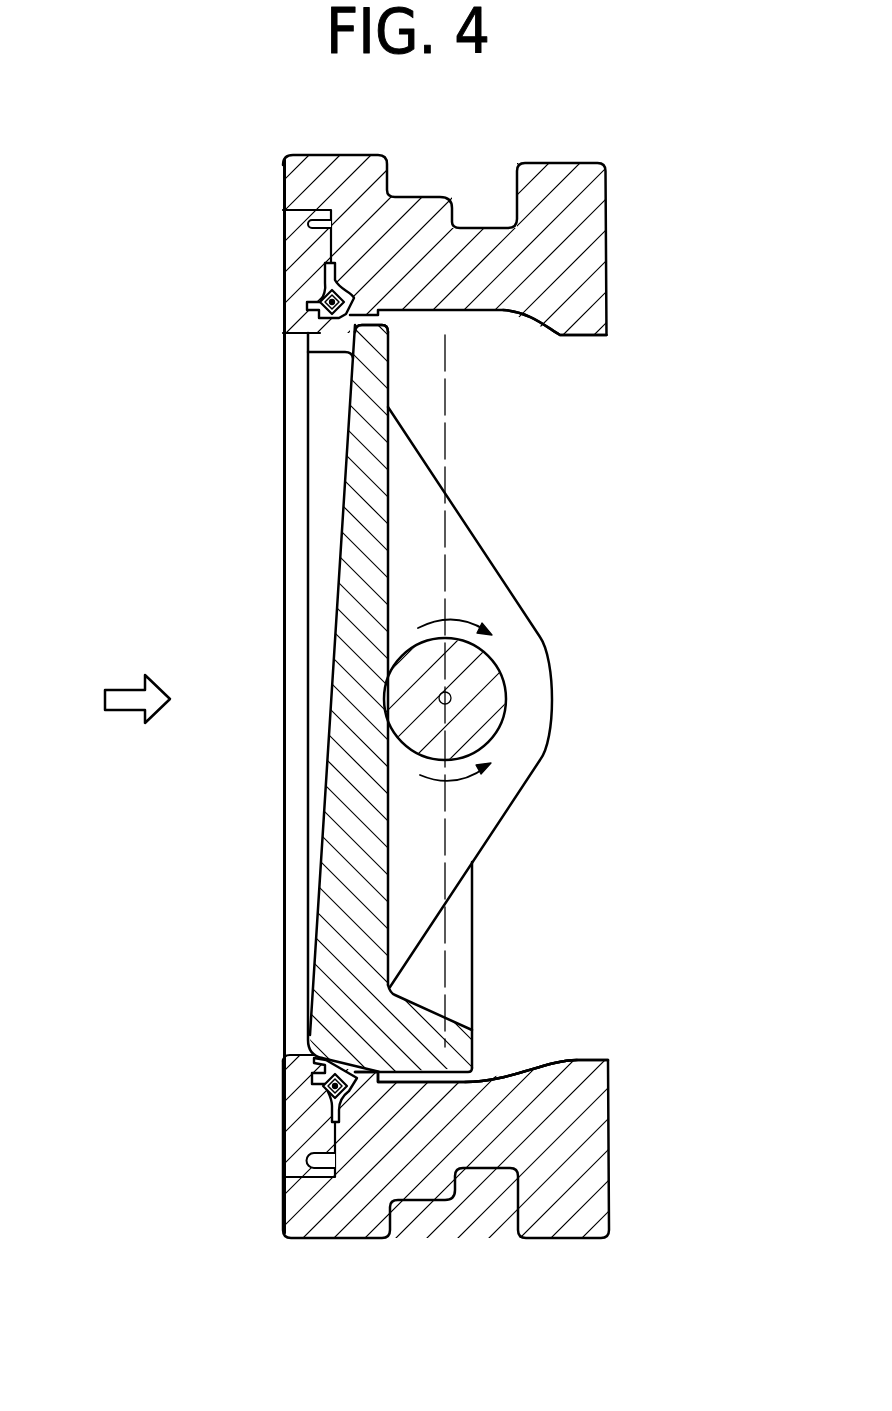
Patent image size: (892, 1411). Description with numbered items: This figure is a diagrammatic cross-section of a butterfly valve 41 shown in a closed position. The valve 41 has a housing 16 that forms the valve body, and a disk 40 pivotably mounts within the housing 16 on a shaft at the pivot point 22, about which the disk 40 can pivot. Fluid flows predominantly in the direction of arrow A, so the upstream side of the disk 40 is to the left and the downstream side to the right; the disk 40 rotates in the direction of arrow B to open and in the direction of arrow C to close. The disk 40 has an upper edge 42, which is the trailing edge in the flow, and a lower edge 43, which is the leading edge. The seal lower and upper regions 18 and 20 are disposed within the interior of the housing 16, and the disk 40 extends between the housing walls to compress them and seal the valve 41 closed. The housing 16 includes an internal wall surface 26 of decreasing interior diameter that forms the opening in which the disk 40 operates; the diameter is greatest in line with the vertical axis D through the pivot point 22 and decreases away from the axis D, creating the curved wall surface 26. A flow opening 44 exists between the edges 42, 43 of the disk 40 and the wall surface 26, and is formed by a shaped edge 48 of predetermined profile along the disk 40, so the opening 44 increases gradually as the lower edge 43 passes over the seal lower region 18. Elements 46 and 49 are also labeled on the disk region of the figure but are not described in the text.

The housing 16 is at (567, 221).
The seal lower region 18 is at (312, 1080).
The seal upper region 20 is at (306, 307).
The pivot point 22 is at (450, 697).
The internal wall surface 26 is at (550, 328).
The disk 40 is at (367, 483).
The butterfly valve 41 is at (262, 172).
The upper edge 42 is at (346, 337).
The lower edge 43 is at (342, 1022).
The flow opening 44 is at (470, 1075).
The disc face gap 46 is at (340, 570).
The shaped edge 48 is at (472, 1043).
The disc rim 49 is at (380, 334).
The arrow A is at (123, 699).
The arrow B is at (455, 608).
The arrow C is at (455, 791).
The vertical axis D is at (443, 458).